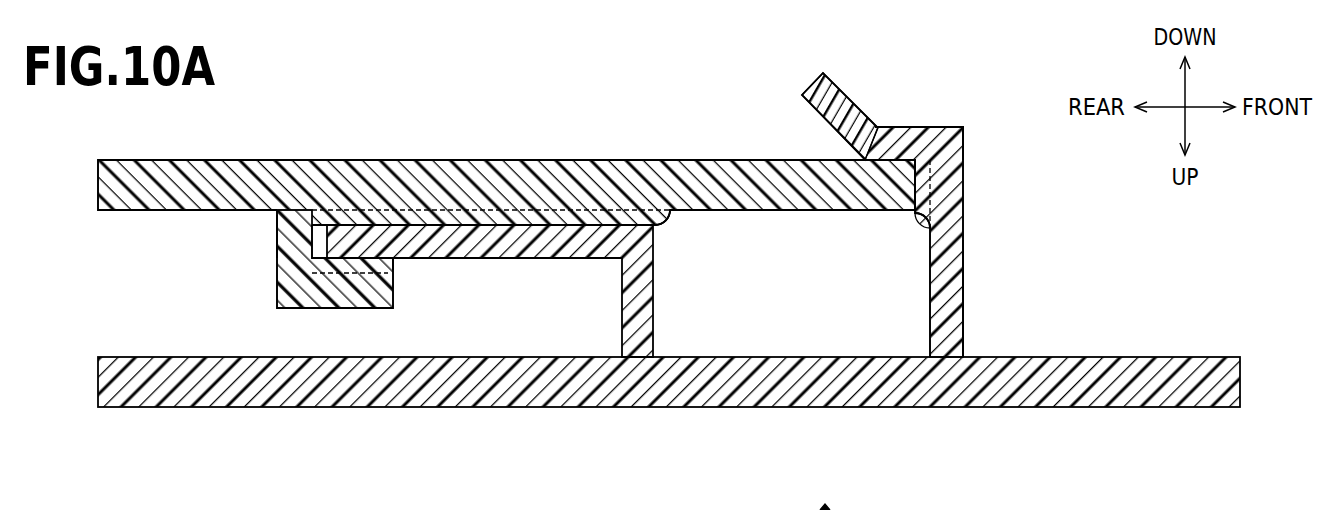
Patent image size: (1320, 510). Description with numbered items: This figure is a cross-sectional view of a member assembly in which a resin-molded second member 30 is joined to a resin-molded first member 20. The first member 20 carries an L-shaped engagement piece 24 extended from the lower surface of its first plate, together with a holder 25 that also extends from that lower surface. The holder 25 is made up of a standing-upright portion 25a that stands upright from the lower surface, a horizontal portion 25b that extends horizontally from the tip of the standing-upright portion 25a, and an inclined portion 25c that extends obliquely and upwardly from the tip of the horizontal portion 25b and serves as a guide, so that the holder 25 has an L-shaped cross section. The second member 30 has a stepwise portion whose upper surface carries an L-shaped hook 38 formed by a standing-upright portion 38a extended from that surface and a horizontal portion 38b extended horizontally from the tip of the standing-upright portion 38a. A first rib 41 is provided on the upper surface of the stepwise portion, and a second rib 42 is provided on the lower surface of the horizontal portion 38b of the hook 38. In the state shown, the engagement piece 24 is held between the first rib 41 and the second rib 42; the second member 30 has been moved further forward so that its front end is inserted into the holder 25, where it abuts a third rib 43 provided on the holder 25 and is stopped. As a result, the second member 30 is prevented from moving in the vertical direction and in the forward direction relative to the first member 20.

The first member 20 is at (977, 408).
The engagement piece 24 is at (532, 258).
The holder 25 is at (968, 223).
The standing-upright portion 25a is at (965, 278).
The horizontal portion 25b is at (917, 127).
The inclined portion 25c is at (855, 103).
The second member 30 is at (530, 158).
The hook 38 is at (276, 297).
The standing-upright portion 38a is at (277, 247).
The horizontal portion 38b is at (322, 308).
The first rib 41 is at (668, 216).
The second rib 42 is at (393, 263).
The third rib 43 is at (913, 220).